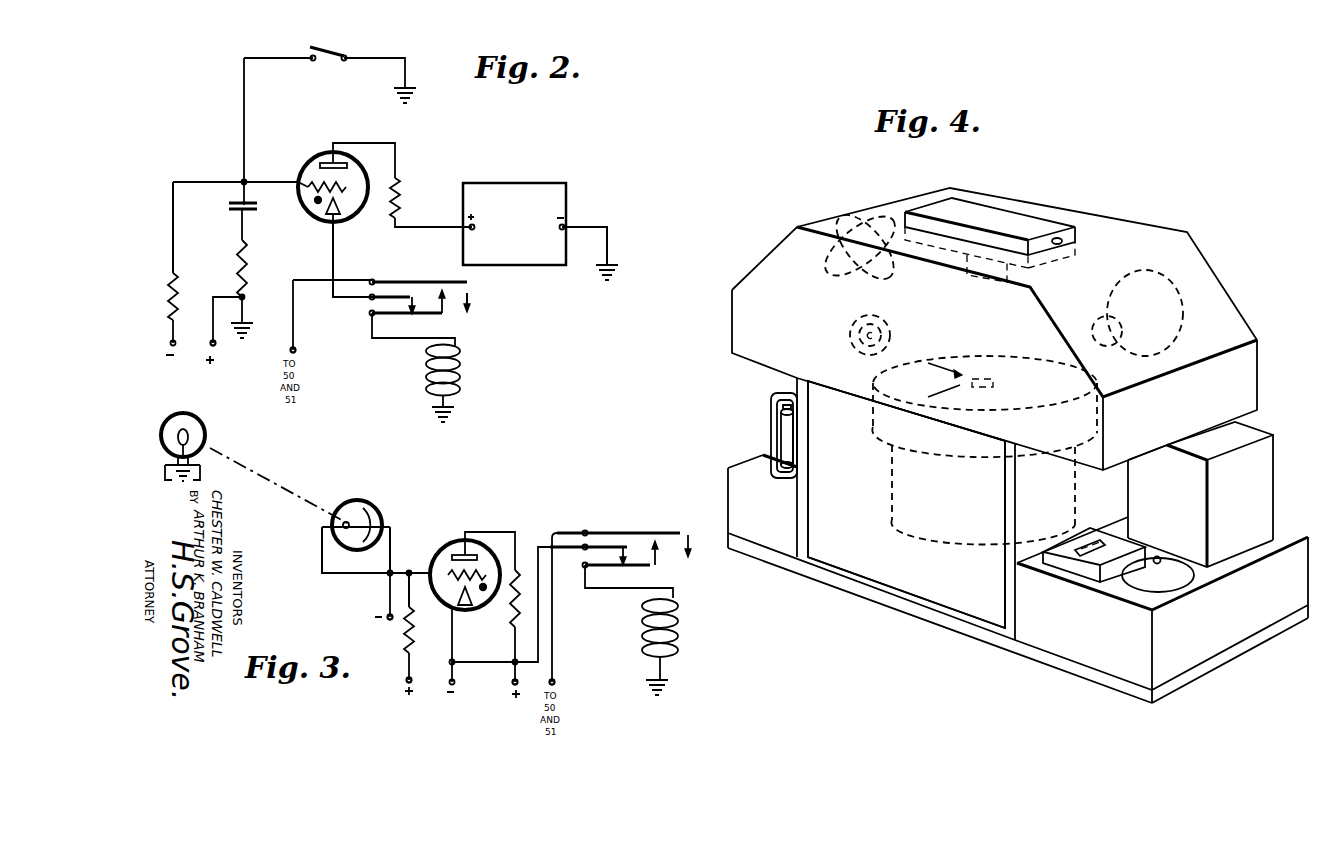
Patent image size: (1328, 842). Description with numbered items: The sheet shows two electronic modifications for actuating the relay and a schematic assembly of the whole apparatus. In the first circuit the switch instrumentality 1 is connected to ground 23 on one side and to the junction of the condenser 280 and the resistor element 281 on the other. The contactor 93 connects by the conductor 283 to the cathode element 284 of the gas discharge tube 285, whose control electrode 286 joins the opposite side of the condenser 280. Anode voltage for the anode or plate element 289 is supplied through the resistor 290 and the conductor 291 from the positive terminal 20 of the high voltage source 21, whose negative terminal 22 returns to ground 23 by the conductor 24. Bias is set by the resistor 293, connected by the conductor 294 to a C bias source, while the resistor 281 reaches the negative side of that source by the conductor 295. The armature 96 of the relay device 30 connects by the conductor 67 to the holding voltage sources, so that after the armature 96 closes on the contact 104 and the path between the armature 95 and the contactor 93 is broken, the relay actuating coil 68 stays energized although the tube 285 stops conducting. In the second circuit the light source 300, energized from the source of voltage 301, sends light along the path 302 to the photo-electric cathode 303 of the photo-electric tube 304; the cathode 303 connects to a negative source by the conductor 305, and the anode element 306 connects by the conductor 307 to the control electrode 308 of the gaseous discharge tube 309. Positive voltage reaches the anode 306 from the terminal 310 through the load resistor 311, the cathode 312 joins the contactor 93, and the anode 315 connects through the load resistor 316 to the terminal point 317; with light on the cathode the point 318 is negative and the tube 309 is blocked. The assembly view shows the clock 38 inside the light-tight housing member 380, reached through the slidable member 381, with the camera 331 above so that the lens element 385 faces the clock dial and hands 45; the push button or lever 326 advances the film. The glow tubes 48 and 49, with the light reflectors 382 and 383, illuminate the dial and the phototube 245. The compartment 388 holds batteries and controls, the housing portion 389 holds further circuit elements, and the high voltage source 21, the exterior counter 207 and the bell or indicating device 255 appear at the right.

In FIG. 2, the switch instrumentality 1 is at (335, 50).
In FIG. 2, the ground 23 is at (418, 96).
In FIG. 3, the ground 23 is at (668, 690).
In FIG. 2, the gas discharge tube 285 is at (365, 168).
In FIG. 2, the anode or plate element 289 is at (328, 163).
In FIG. 2, the control electrode 286 is at (308, 185).
In FIG. 2, the cathode element 284 is at (346, 217).
In FIG. 2, the conductor 283 is at (330, 264).
In FIG. 2, the resistor 290 is at (400, 190).
In FIG. 2, the conductor 291 is at (420, 228).
In FIG. 2, the positive terminal 20 is at (468, 229).
In FIG. 2, the high voltage source 21 is at (512, 183).
In FIG. 4, the high voltage source 21 is at (1264, 485).
In FIG. 2, the negative terminal 22 is at (566, 227).
In FIG. 2, the conductor 24 is at (609, 241).
In FIG. 2, the condenser 280 is at (238, 225).
In FIG. 2, the resistor element 281 is at (176, 276).
In FIG. 2, the resistor 293 is at (248, 262).
In FIG. 2, the conductor 295 is at (176, 318).
In FIG. 2, the conductor 294 is at (215, 346).
In FIG. 2, the conductor 67 is at (295, 330).
In FIG. 3, the conductor 67 is at (554, 655).
In FIG. 2, the armature 96 is at (420, 281).
In FIG. 3, the armature 96 is at (632, 532).
In FIG. 2, the contactor 93 is at (370, 297).
In FIG. 3, the contactor 93 is at (586, 550).
In FIG. 2, the armature 95 is at (383, 335).
In FIG. 3, the armature 95 is at (650, 568).
In FIG. 2, the contact 104 is at (447, 300).
In FIG. 2, the relay actuating coil 68 is at (462, 363).
In FIG. 3, the relay actuating coil 68 is at (678, 636).
In FIG. 3, the light source 300 is at (204, 427).
In FIG. 3, the source of voltage 301 is at (203, 482).
In FIG. 3, the path 302 is at (282, 488).
In FIG. 3, the photo-electric tube 304 is at (354, 502).
In FIG. 3, the photo-electric cathode 303 is at (366, 512).
In FIG. 3, the anode element 306 is at (343, 524).
In FIG. 3, the conductor 307 is at (328, 577).
In FIG. 3, the point 318 is at (411, 572).
In FIG. 3, the conductor 305 is at (384, 615).
In FIG. 3, the load resistor 311 is at (405, 642).
In FIG. 3, the terminal 310 is at (403, 683).
In FIG. 3, the anode 315 is at (482, 570).
In FIG. 3, the control electrode 308 is at (455, 553).
In FIG. 3, the gaseous discharge tube 309 is at (480, 548).
In FIG. 3, the cathode 312 is at (465, 606).
In FIG. 3, the load resistor 316 is at (512, 628).
In FIG. 3, the terminal point 317 is at (512, 686).
In FIG. 4, the housing member 380 is at (742, 344).
In FIG. 4, the camera 331 is at (1010, 218).
In FIG. 4, the push button or lever 326 is at (1060, 239).
In FIG. 4, the lens element 385 is at (978, 283).
In FIG. 4, the glow tube 48 is at (887, 267).
In FIG. 4, the light reflector 382 is at (830, 262).
In FIG. 4, the phototube 245 is at (851, 335).
In FIG. 4, the light reflector 383 is at (1184, 328).
In FIG. 4, the glow tube 49 is at (1093, 332).
In FIG. 4, the clock 38 is at (890, 503).
In FIG. 4, the clock dial and hands 45 is at (963, 380).
In FIG. 4, the slidable member 381 is at (908, 582).
In FIG. 4, the compartment 388 is at (780, 545).
In FIG. 4, the relay device 30 is at (768, 440).
In FIG. 4, the housing portion 389 is at (1082, 655).
In FIG. 4, the exterior counter 207 is at (1083, 570).
In FIG. 4, the bell or indicating device 255 is at (1170, 583).